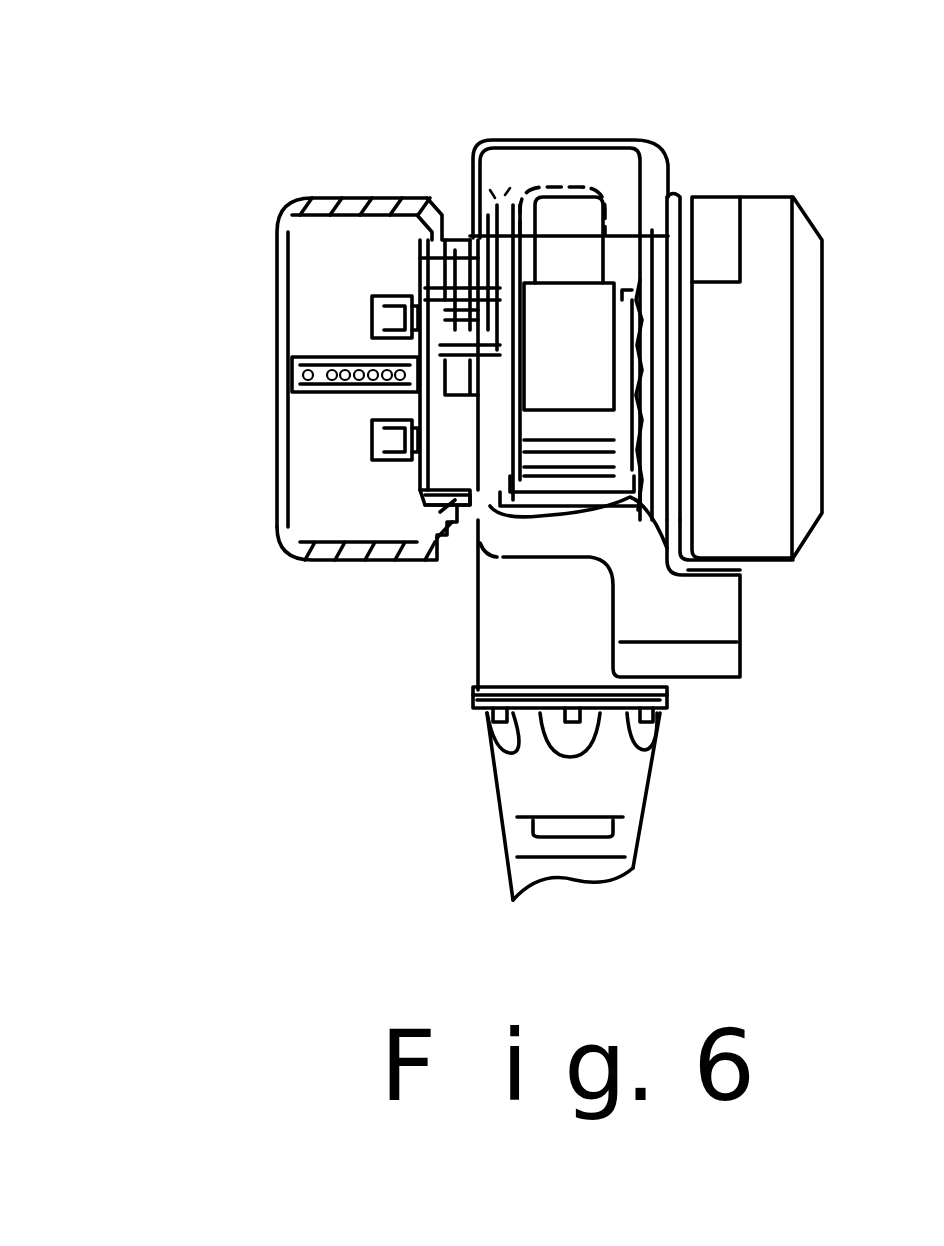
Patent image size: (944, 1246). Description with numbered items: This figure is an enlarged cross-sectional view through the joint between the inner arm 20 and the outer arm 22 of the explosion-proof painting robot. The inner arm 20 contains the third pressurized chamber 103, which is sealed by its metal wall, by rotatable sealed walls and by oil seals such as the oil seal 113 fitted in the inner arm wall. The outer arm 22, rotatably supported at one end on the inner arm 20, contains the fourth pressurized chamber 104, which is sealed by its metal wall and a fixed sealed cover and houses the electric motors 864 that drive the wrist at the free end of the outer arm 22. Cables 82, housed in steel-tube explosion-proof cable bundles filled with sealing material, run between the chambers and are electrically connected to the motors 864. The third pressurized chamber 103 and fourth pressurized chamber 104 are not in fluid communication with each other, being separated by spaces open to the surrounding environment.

The third pressurized chamber 103 is at (322, 266).
The cables 82 is at (300, 372).
The oil seal 113 is at (446, 242).
The fourth pressurized chamber 104 is at (556, 162).
The electric motors 864 is at (583, 358).
The inner arm 20 is at (318, 560).
The outer arm 22 is at (613, 780).